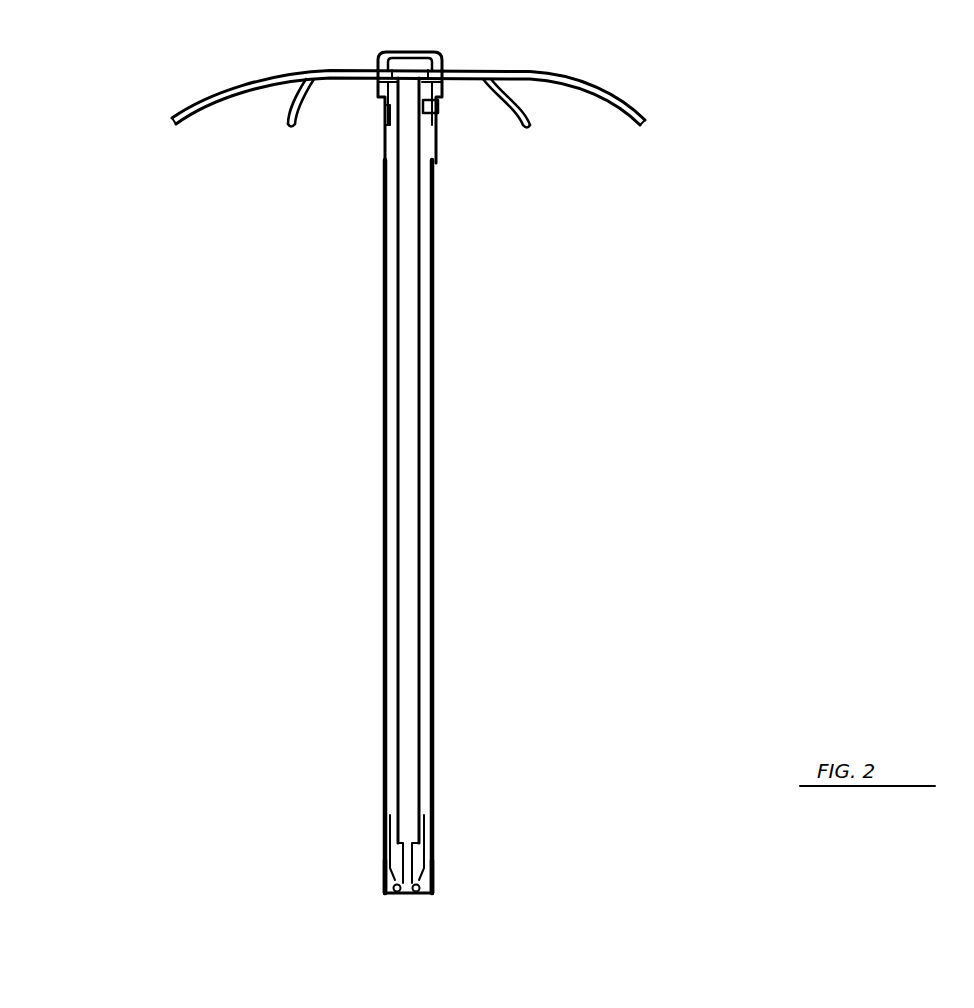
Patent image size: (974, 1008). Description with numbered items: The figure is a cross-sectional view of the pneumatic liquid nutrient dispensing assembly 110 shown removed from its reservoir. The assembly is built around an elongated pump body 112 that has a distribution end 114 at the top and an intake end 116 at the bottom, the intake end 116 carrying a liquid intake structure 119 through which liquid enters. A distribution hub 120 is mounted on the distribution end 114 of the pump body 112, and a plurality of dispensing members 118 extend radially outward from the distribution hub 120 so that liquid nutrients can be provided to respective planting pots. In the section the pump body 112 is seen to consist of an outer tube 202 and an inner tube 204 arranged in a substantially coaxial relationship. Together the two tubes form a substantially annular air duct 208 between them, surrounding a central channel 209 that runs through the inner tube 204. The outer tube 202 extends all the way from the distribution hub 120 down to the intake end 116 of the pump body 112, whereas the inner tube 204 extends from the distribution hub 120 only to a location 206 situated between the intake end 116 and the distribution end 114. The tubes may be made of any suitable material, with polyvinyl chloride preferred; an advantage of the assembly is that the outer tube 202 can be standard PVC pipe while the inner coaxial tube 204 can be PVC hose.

The pneumatic liquid nutrient dispensing assembly 110 is at (732, 74).
The pump body 112 is at (431, 485).
The distribution end 114 is at (423, 146).
The intake end 116 is at (420, 903).
The dispensing members 118 is at (288, 105).
The intake structure 119 is at (435, 857).
The distribution hub 120 is at (376, 63).
The outer tube 202 is at (382, 323).
The inner tube 204 is at (396, 373).
The location 206 is at (400, 862).
The annular air duct 208 is at (424, 263).
The central channel 209 is at (408, 290).